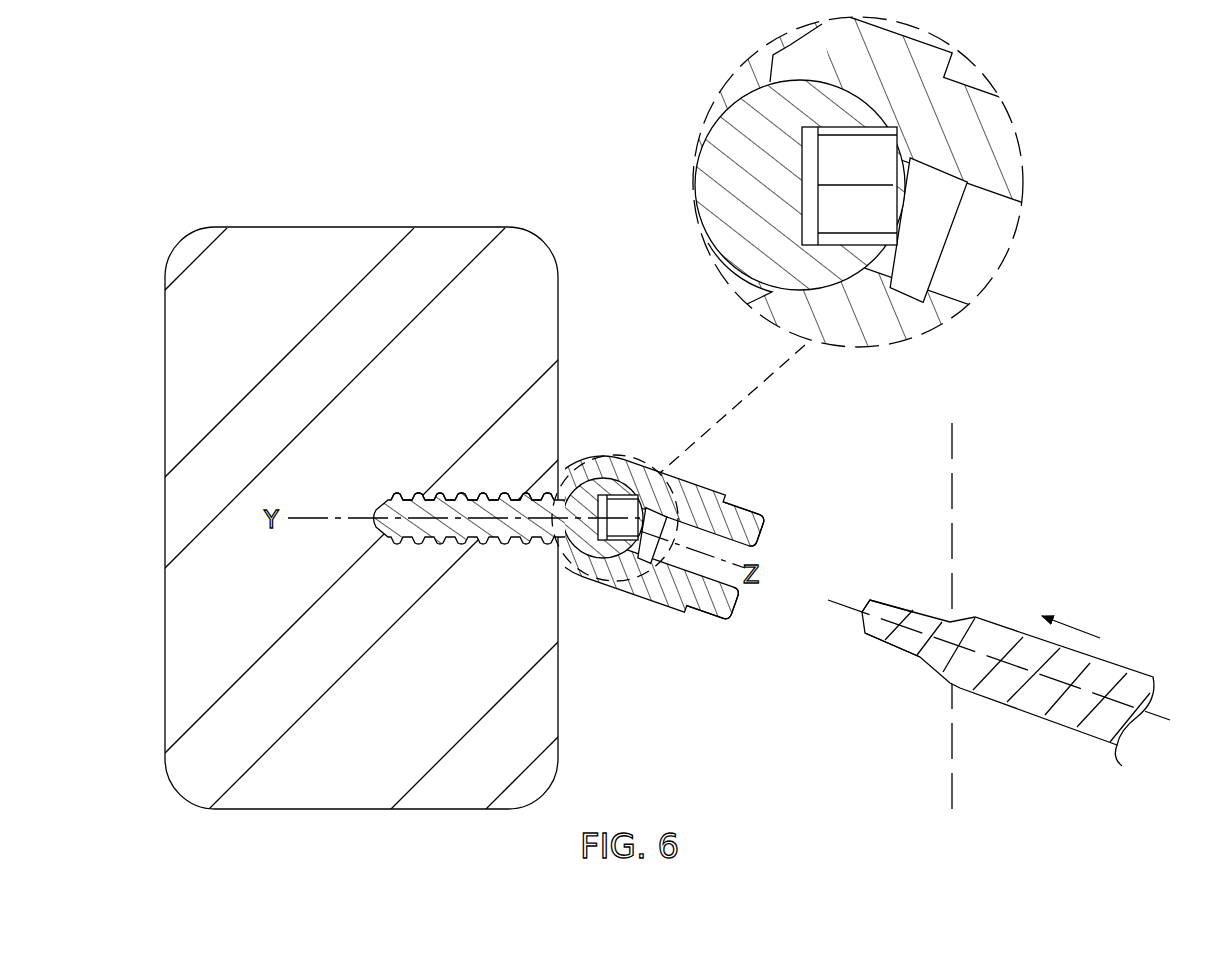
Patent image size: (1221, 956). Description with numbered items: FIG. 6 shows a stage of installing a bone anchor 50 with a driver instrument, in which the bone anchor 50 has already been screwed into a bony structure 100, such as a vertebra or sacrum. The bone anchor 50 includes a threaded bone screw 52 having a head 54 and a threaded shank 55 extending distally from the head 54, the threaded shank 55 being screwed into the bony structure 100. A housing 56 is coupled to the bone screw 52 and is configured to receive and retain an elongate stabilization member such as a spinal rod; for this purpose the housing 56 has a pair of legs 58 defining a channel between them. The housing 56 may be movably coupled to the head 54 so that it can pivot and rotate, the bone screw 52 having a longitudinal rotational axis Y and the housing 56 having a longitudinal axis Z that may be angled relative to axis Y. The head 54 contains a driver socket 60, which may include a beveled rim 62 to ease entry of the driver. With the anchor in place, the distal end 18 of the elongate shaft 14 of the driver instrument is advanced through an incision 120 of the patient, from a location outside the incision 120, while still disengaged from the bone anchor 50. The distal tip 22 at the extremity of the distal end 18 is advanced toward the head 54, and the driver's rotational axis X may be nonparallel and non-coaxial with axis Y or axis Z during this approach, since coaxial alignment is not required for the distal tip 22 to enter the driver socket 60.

The bony structure 100 is at (318, 228).
The bone anchor 50 is at (798, 339).
The threaded bone screw 52 is at (428, 541).
The threaded shank 55 is at (467, 497).
The head 54 is at (610, 560).
The housing 56 is at (622, 457).
The legs 58 is at (758, 494).
The driver socket 60 is at (622, 503).
The beveled rim 62 is at (925, 238).
The incision 120 is at (953, 445).
The elongate shaft 14 is at (1113, 667).
The distal tip 22 is at (862, 625).
The distal end 18 is at (870, 673).